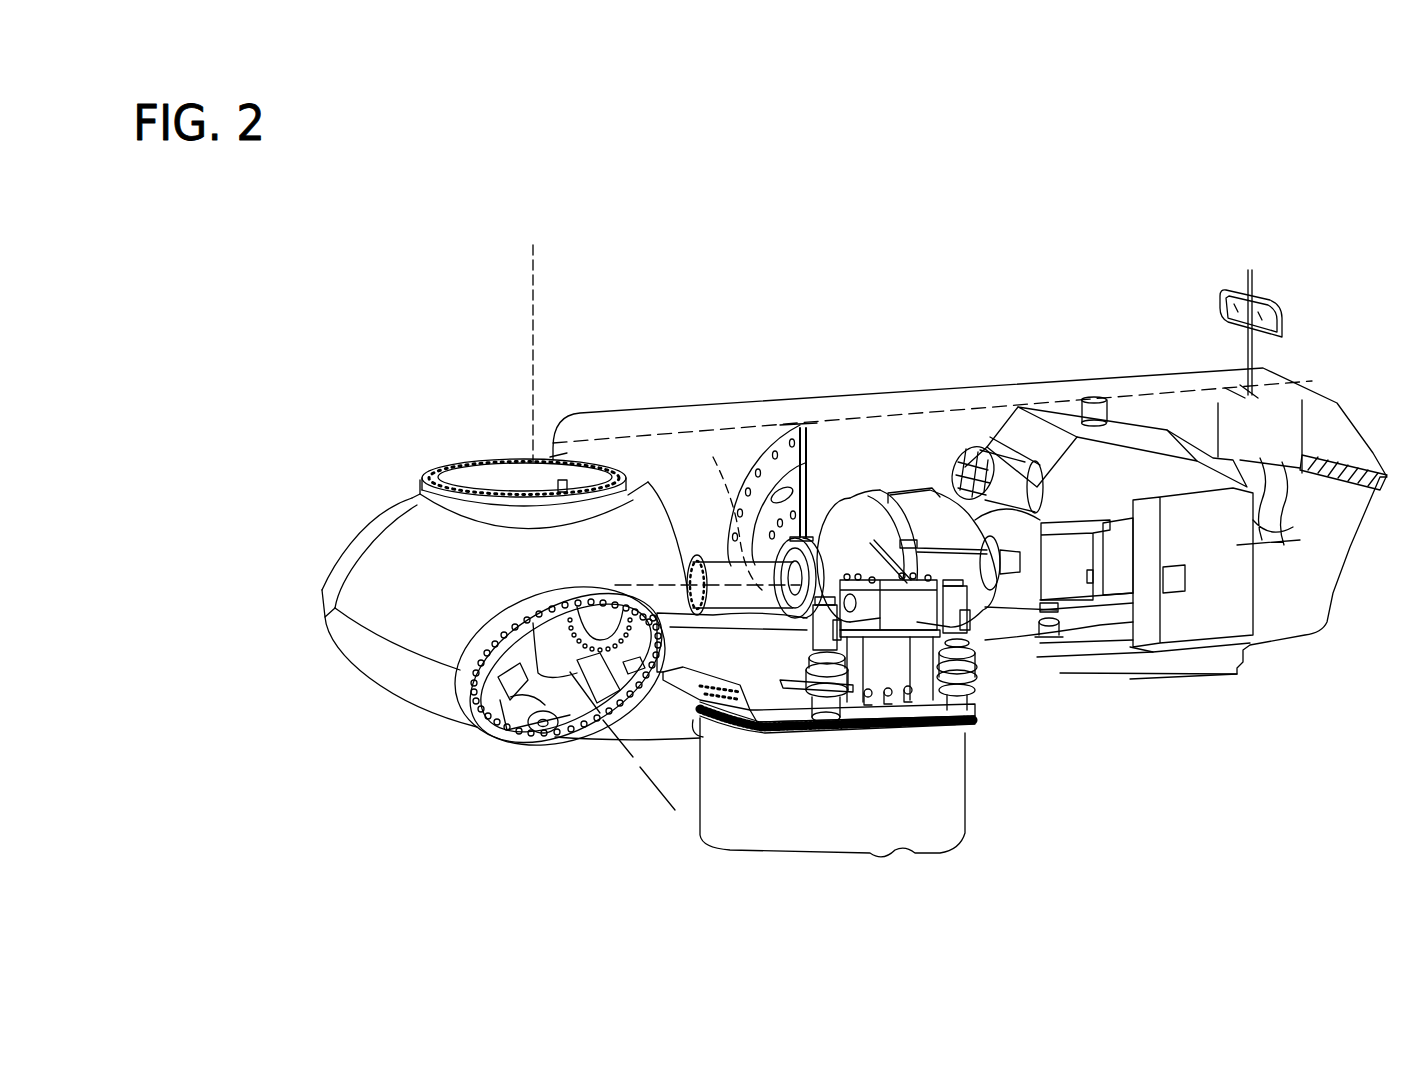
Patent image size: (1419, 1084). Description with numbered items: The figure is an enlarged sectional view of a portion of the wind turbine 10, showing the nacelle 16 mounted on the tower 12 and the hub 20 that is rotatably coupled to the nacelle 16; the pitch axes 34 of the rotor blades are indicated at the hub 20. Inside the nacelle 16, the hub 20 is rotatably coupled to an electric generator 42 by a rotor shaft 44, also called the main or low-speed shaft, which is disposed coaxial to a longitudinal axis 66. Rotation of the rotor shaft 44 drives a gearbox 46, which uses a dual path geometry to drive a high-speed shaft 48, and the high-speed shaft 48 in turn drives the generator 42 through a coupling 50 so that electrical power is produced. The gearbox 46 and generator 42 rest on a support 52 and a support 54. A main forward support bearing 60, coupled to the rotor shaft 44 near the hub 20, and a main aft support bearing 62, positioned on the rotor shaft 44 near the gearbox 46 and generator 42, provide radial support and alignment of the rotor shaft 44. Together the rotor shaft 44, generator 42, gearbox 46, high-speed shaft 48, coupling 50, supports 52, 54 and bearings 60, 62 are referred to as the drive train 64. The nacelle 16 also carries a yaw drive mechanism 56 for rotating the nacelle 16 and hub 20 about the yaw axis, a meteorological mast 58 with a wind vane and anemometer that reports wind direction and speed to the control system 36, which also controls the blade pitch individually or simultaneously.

The wind turbine 10 is at (340, 318).
The tower 12 is at (887, 850).
The nacelle 16 is at (945, 330).
The hub 20 is at (295, 593).
The pitch axes 34 is at (560, 287).
The control system 36 is at (1183, 523).
The electric generator 42 is at (1067, 583).
The rotor shaft 44 is at (717, 563).
The gearbox 46 is at (907, 523).
The high-speed shaft 48 is at (977, 603).
The coupling 50 is at (1007, 527).
The support 52 is at (933, 713).
The support 54 is at (1047, 603).
The yaw drive mechanism 56 is at (817, 703).
The meteorological mast 58 is at (1287, 315).
The main forward support bearing 60 is at (693, 600).
The main aft support bearing 62 is at (820, 547).
The drive train 64 is at (765, 484).
The longitudinal axis 66 is at (713, 457).